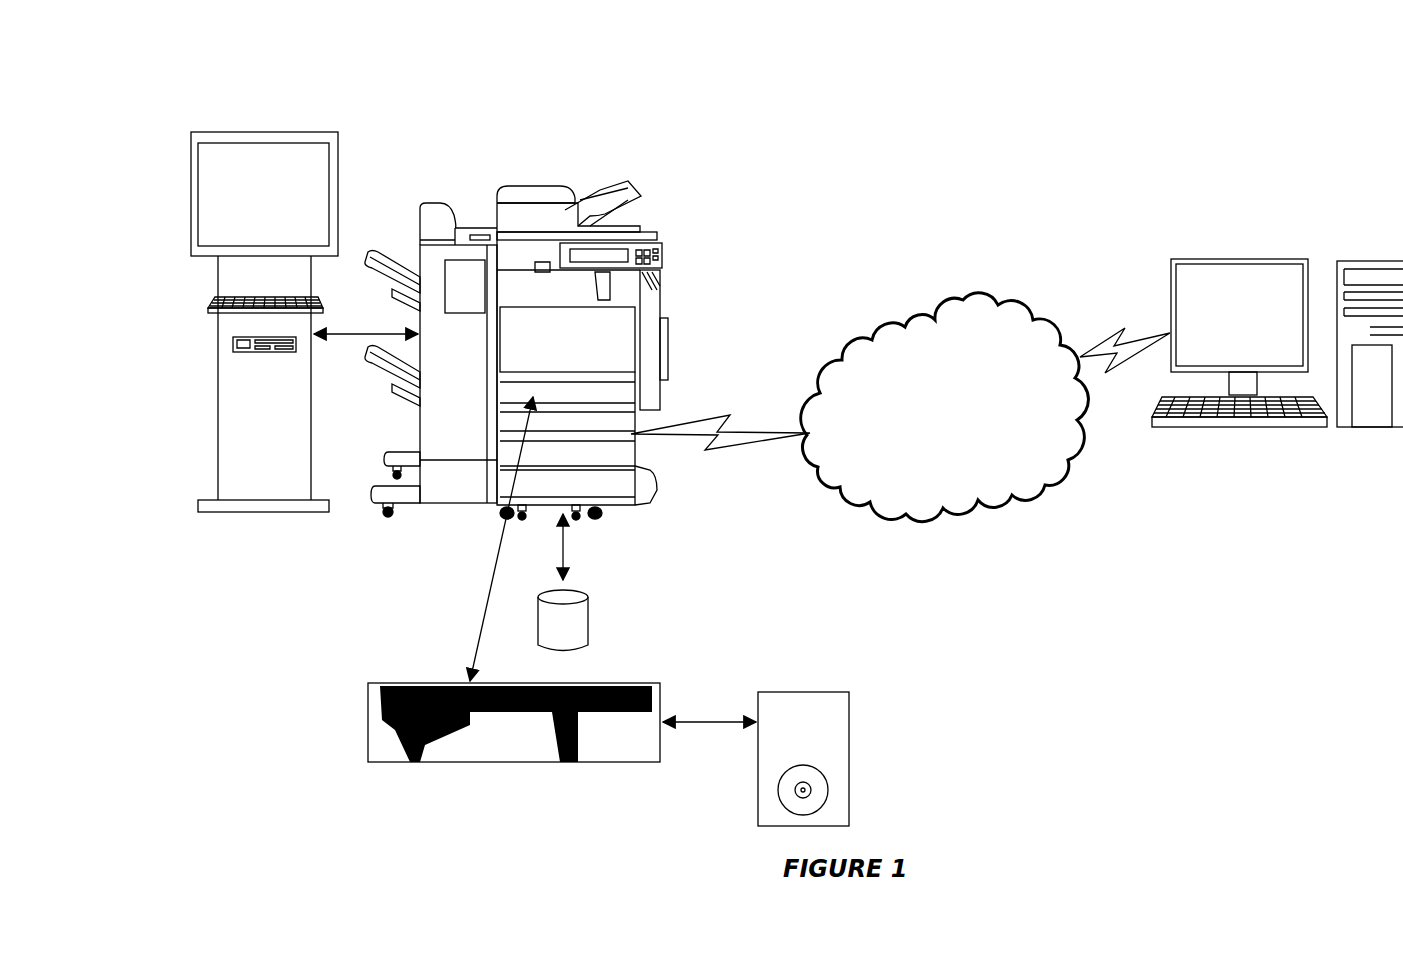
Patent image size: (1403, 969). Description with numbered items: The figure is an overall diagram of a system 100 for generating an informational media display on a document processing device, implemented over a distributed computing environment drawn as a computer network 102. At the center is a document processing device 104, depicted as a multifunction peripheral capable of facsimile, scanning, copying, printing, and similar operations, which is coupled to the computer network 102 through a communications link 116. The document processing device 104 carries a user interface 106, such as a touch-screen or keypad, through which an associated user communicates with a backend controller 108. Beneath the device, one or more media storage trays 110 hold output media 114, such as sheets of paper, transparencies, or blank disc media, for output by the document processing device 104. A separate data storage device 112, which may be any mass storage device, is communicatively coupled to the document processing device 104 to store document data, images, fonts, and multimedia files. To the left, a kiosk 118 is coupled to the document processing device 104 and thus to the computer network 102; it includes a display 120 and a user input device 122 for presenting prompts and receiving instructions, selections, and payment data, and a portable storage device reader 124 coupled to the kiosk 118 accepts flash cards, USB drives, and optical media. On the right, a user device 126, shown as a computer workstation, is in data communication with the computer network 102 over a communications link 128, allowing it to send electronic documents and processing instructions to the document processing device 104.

The system 100 is at (1018, 142).
The computer network 102 is at (988, 297).
The document processing device 104 is at (569, 190).
The user interface 106 is at (661, 252).
The controller 108 is at (628, 362).
The media storage tray 110 is at (597, 390).
The data storage device 112 is at (590, 601).
The output media 114 is at (808, 692).
The communications link 116 is at (768, 393).
The kiosk 118 is at (189, 132).
The display 120 is at (316, 221).
The user input device 122 is at (300, 301).
The portable storage device reader 124 is at (233, 343).
The user device 126 is at (1247, 259).
The communications link 128 is at (1110, 373).